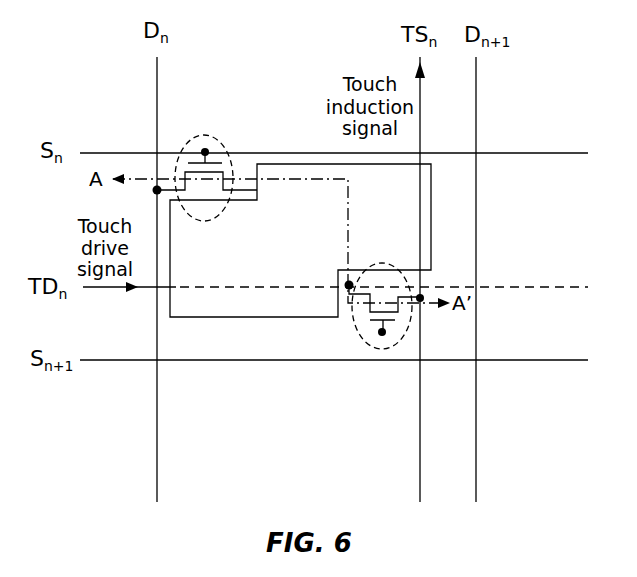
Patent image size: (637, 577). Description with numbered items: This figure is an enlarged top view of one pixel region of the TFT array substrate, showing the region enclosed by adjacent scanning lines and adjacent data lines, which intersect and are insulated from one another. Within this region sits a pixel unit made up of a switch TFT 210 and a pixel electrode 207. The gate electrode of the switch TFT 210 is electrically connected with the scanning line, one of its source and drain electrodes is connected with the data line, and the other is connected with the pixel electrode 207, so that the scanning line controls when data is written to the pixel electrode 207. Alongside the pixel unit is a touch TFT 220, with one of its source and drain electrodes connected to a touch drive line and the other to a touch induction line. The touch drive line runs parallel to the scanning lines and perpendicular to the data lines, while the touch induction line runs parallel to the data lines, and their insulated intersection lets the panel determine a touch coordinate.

The pixel electrode 207 is at (431, 219).
The switch TFT 210 is at (205, 135).
The touch TFT 220 is at (355, 327).